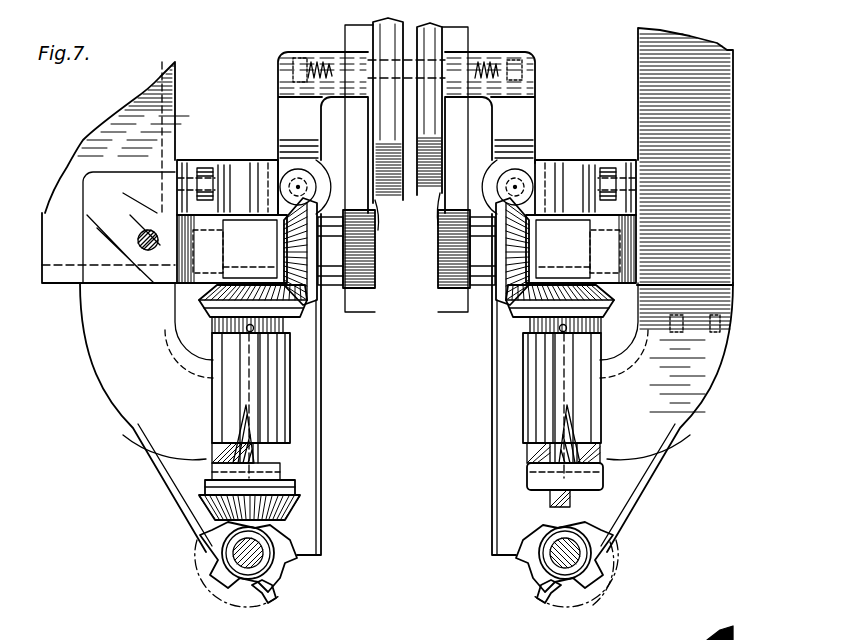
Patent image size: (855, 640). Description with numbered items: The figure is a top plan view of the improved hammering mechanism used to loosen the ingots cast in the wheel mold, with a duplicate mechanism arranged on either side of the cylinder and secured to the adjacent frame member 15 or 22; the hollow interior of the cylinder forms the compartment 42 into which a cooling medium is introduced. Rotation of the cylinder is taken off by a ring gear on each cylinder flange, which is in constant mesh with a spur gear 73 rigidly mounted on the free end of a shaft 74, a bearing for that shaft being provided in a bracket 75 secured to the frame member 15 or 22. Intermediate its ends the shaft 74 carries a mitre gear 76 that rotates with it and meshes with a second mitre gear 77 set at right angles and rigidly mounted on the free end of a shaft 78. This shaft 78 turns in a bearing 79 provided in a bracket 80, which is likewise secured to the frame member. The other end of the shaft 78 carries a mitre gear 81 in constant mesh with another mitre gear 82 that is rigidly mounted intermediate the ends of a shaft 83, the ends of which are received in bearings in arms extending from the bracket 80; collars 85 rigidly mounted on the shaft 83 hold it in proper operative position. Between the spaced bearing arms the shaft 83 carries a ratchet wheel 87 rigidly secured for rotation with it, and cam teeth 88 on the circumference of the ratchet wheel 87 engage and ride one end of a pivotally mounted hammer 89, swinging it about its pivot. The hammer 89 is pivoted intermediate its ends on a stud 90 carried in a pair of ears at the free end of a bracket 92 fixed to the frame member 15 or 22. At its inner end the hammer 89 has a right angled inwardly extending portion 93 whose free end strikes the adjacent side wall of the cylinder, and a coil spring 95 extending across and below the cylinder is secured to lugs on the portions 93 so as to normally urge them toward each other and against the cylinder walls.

The frame member 15 is at (63, 276).
The frame member 22 is at (713, 157).
The compartment 42 is at (396, 215).
The spur gear 73 is at (353, 290).
The shaft 74 is at (236, 200).
The bracket 75 is at (334, 232).
The mitre gear 76 is at (305, 215).
The second mitre gear 77 is at (207, 305).
The shaft 78 is at (247, 388).
The bearing 79 is at (286, 435).
The bracket 80 is at (123, 398).
The mitre gear 81 is at (300, 494).
The mitre gear 82 is at (214, 586).
The shaft 83 is at (260, 557).
The collar 85 is at (806, 639).
The ratchet wheel 87 is at (553, 592).
The cam teeth 88 is at (254, 605).
The hammer 89 is at (303, 463).
The stud 90 is at (306, 183).
The bracket 92 is at (212, 160).
The right angled inwardly extending portion 93 is at (313, 56).
The coil spring 95 is at (281, 91).